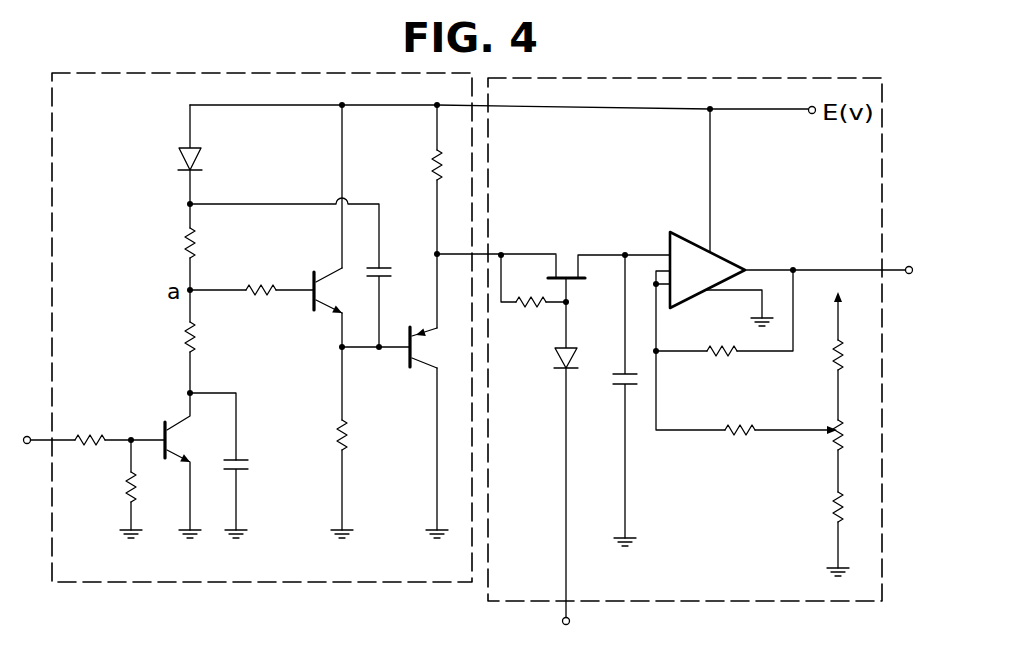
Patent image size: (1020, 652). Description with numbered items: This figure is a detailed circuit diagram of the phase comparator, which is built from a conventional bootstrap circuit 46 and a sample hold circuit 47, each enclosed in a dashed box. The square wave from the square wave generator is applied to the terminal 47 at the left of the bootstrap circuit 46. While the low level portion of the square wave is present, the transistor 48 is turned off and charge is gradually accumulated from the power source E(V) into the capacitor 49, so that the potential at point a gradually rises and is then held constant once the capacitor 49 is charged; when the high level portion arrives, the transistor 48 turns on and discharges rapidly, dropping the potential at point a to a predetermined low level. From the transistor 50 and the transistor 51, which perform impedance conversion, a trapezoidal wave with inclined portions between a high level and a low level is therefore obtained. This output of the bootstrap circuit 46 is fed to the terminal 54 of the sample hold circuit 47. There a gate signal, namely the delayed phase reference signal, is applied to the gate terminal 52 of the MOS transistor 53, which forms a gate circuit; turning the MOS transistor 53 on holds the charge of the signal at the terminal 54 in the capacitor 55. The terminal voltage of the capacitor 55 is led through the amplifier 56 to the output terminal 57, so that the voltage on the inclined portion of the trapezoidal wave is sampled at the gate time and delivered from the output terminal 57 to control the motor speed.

The bootstrap circuit 46 is at (253, 583).
The sample hold circuit 47 is at (27, 436).
The transistor 48 is at (176, 430).
The capacitor 49 is at (250, 463).
The transistor 50 is at (325, 282).
The transistor 51 is at (414, 366).
The gate terminal 52 is at (560, 621).
The MOS transistor 53 is at (566, 276).
The terminal 54 is at (503, 252).
The capacitor 55 is at (614, 376).
The amplifier 56 is at (727, 258).
The output terminal 57 is at (909, 266).